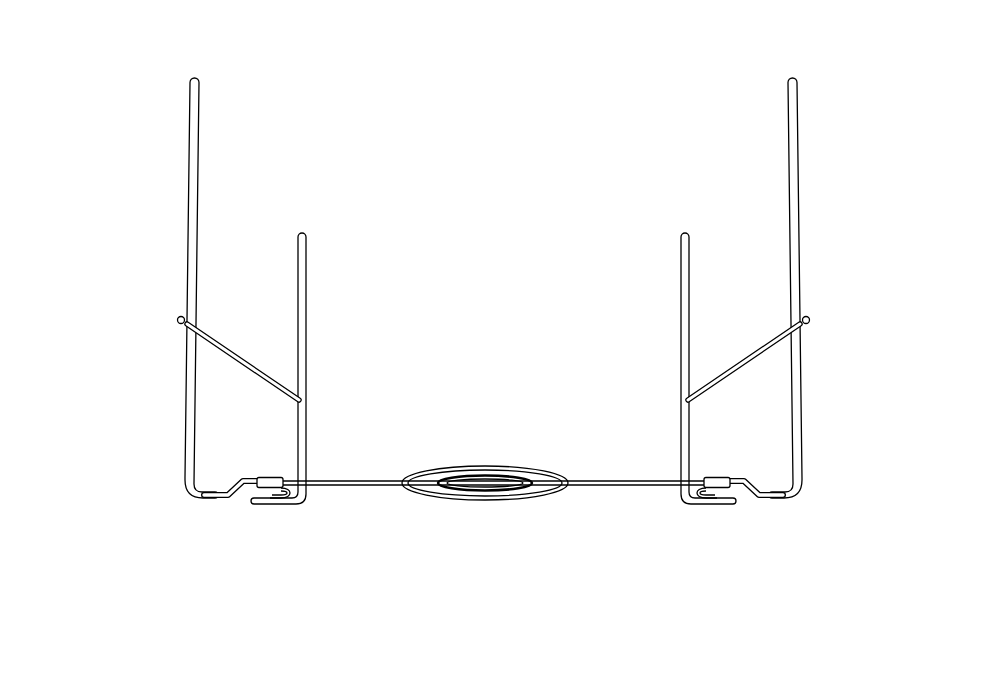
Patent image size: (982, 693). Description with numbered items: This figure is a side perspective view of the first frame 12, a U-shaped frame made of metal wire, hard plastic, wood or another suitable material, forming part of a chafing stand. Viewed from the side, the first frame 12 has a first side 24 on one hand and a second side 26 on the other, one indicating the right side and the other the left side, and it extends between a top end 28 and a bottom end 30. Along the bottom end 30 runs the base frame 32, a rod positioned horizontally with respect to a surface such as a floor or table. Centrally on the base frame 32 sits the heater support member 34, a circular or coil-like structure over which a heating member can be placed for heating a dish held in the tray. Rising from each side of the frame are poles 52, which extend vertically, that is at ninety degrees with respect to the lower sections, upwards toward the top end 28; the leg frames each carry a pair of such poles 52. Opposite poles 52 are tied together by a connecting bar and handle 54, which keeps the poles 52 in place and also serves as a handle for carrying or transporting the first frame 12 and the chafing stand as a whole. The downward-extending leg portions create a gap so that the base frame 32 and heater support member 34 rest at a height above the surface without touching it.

The first frame 12 is at (135, 51).
The first side 24 is at (838, 216).
The second side 26 is at (145, 246).
The top end 28 is at (497, 103).
The bottom end 30 is at (494, 536).
The base frame 32 is at (598, 481).
The heater support member 34 is at (484, 466).
The poles 52 is at (188, 191).
The connecting bar and handle 54 is at (231, 350).